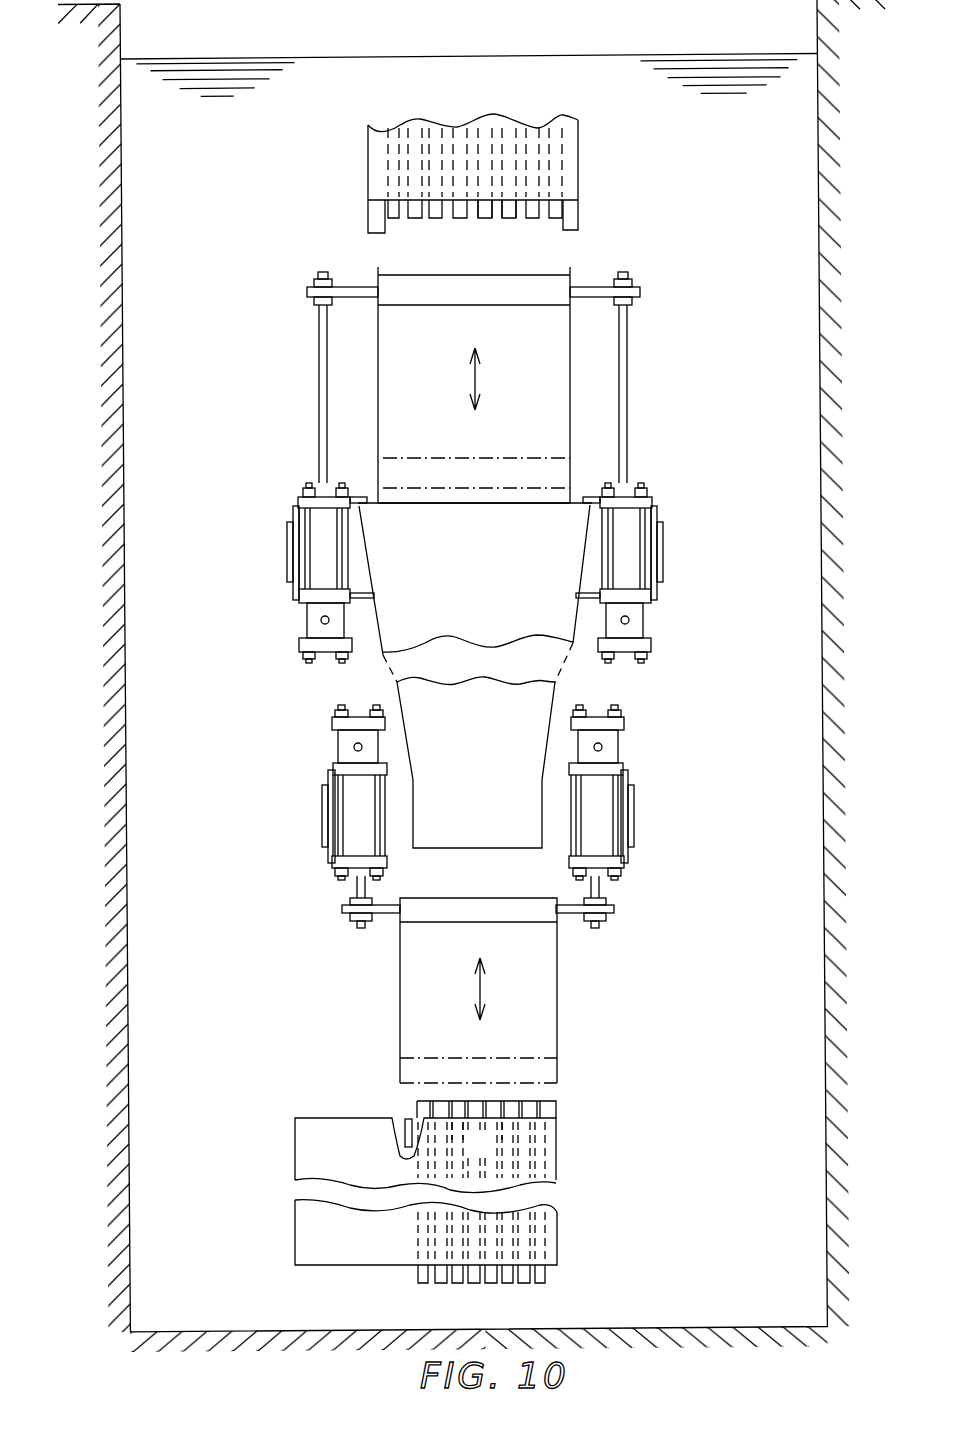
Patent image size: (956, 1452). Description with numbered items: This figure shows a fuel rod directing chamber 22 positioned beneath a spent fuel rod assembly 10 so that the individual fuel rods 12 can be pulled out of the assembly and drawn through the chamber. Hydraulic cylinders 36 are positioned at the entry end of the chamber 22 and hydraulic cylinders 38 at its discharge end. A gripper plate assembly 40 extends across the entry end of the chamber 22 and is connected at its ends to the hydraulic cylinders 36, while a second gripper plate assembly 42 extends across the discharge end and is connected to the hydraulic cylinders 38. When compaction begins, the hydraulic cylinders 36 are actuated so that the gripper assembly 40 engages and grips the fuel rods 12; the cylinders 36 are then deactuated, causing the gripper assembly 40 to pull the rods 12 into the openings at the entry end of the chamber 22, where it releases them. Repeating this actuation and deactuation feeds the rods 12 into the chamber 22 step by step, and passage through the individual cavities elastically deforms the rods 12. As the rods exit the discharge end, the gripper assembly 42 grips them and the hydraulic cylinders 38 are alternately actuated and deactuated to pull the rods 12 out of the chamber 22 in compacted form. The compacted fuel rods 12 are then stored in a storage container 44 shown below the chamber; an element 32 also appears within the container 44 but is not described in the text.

The spent fuel rod assembly 10 is at (592, 142).
The fuel rods 12 is at (530, 220).
The fuel rod directing chamber 22 is at (552, 700).
The article 32 is at (494, 1155).
The hydraulic cylinders 36 is at (288, 548).
The hydraulic cylinders 38 is at (322, 812).
The gripper plate assembly 40 is at (572, 272).
The gripper plate assembly 42 is at (557, 921).
The storage container 44 is at (557, 1153).